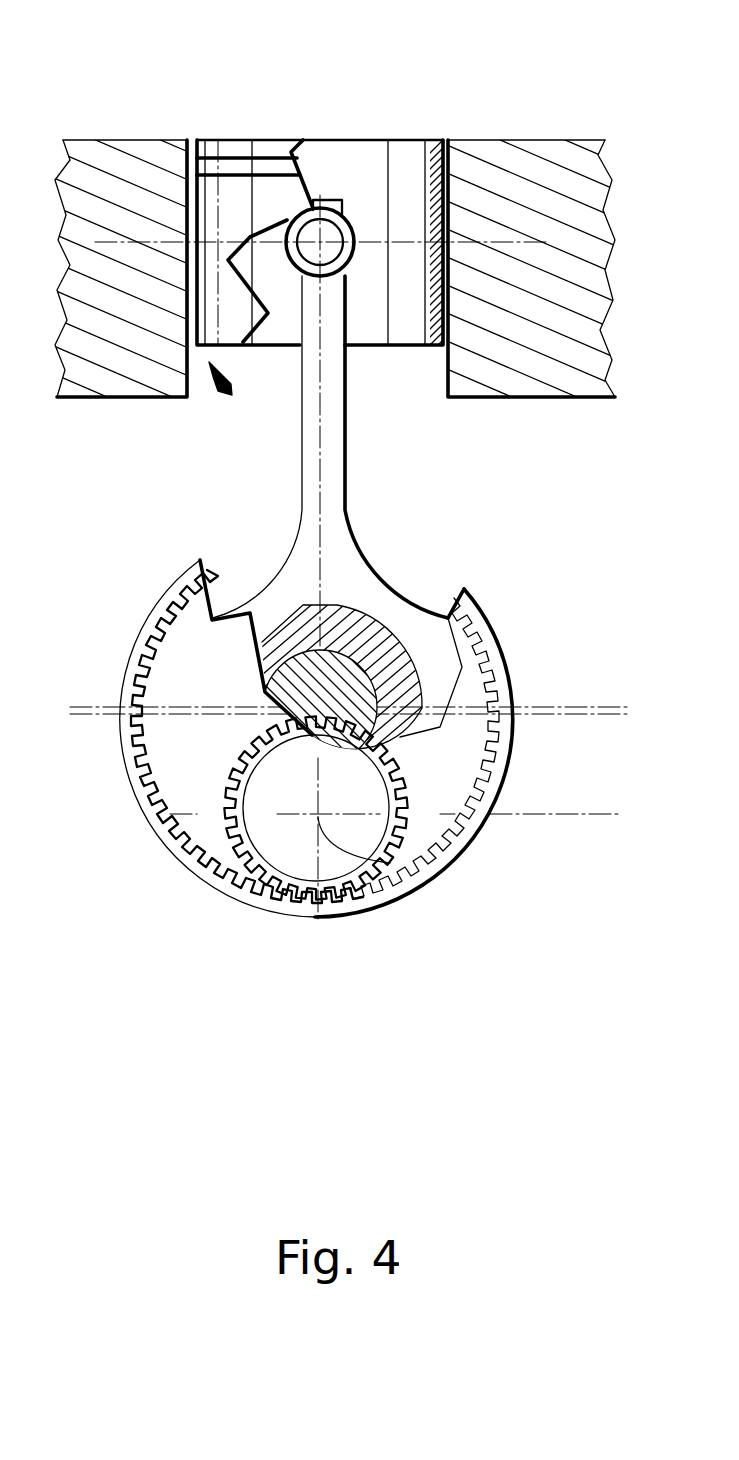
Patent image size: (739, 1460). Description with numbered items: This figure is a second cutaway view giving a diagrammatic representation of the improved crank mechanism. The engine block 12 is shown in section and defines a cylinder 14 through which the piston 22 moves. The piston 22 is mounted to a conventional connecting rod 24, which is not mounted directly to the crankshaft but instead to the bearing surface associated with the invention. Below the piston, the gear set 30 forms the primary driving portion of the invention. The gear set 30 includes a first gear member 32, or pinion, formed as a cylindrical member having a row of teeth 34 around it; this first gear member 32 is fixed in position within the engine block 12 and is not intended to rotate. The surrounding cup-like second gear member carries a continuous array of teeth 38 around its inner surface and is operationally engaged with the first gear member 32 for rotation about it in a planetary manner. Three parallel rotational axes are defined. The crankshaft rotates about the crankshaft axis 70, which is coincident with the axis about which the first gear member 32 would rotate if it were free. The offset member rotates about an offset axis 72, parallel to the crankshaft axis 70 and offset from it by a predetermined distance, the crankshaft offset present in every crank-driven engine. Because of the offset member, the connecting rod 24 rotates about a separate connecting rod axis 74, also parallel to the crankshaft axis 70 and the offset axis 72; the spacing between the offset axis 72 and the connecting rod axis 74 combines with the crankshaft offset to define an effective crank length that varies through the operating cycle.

The engine block 12 is at (140, 350).
The cylinder 14 is at (227, 405).
The piston 22 is at (372, 150).
The connecting rod 24 is at (335, 497).
The gear set 30 is at (170, 965).
The first gear member 32 is at (307, 853).
The teeth 34 is at (236, 862).
The teeth 38 is at (197, 836).
The crankshaft axis 70 is at (385, 857).
The offset axis 72 is at (410, 731).
The connecting rod axis 74 is at (375, 650).